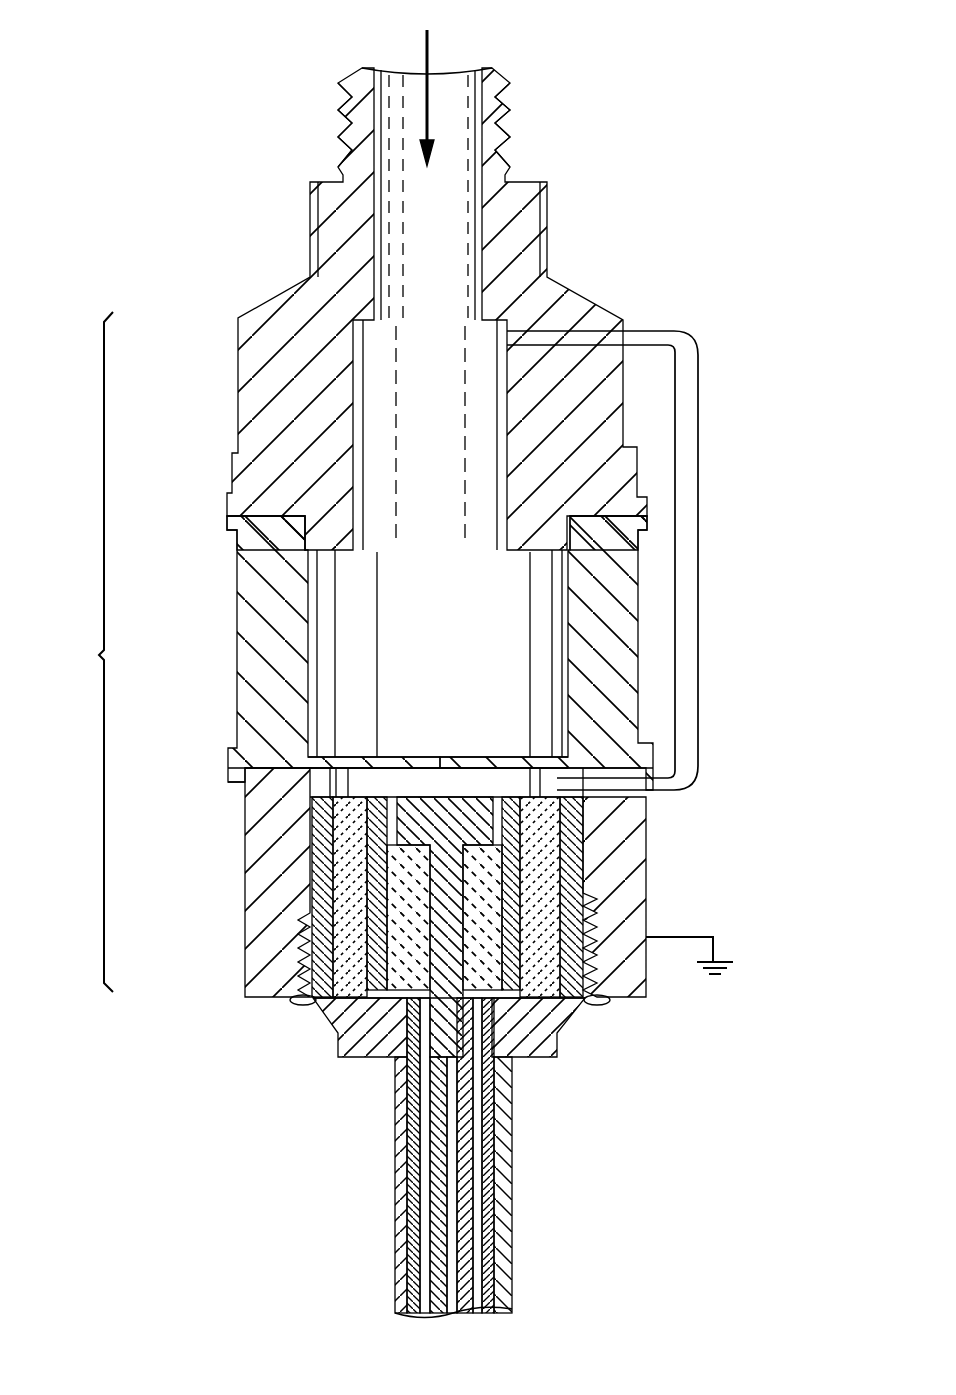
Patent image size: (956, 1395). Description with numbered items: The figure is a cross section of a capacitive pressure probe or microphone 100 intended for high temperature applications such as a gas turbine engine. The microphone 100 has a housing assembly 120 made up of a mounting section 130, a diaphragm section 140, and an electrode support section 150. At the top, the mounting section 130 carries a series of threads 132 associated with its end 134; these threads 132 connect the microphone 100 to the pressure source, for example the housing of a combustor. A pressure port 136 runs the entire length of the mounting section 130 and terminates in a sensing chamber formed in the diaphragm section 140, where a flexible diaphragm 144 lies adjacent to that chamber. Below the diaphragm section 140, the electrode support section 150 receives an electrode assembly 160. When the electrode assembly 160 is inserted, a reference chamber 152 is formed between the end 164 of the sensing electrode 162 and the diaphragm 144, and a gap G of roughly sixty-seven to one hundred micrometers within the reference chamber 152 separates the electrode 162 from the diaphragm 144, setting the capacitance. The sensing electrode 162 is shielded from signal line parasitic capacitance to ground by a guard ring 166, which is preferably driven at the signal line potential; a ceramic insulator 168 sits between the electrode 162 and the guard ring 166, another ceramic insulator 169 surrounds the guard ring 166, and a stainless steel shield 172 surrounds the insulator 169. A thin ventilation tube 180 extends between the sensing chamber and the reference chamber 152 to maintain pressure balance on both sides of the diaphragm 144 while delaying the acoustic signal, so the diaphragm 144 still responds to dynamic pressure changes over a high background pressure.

The capacitive microphone 100 is at (197, 176).
The housing assembly 120 is at (80, 655).
The mounting section 130 is at (238, 412).
The threads 132 is at (511, 112).
The end 134 is at (495, 66).
The pressure port 136 is at (410, 72).
The diaphragm section 140 is at (237, 618).
The diaphragm 144 is at (505, 757).
The electrode support section 150 is at (245, 855).
The reference chamber 152 is at (446, 794).
The electrode assembly 160 is at (333, 1048).
The sensing electrode 162 is at (562, 833).
The end of the electrode 164 is at (478, 790).
The guard ring 166 is at (375, 933).
The ceramic insulator 168 is at (400, 887).
The ceramic insulator 169 is at (515, 1000).
The stainless steel shield 172 is at (277, 771).
The ventilation tube 180 is at (700, 405).
The gap G is at (420, 785).